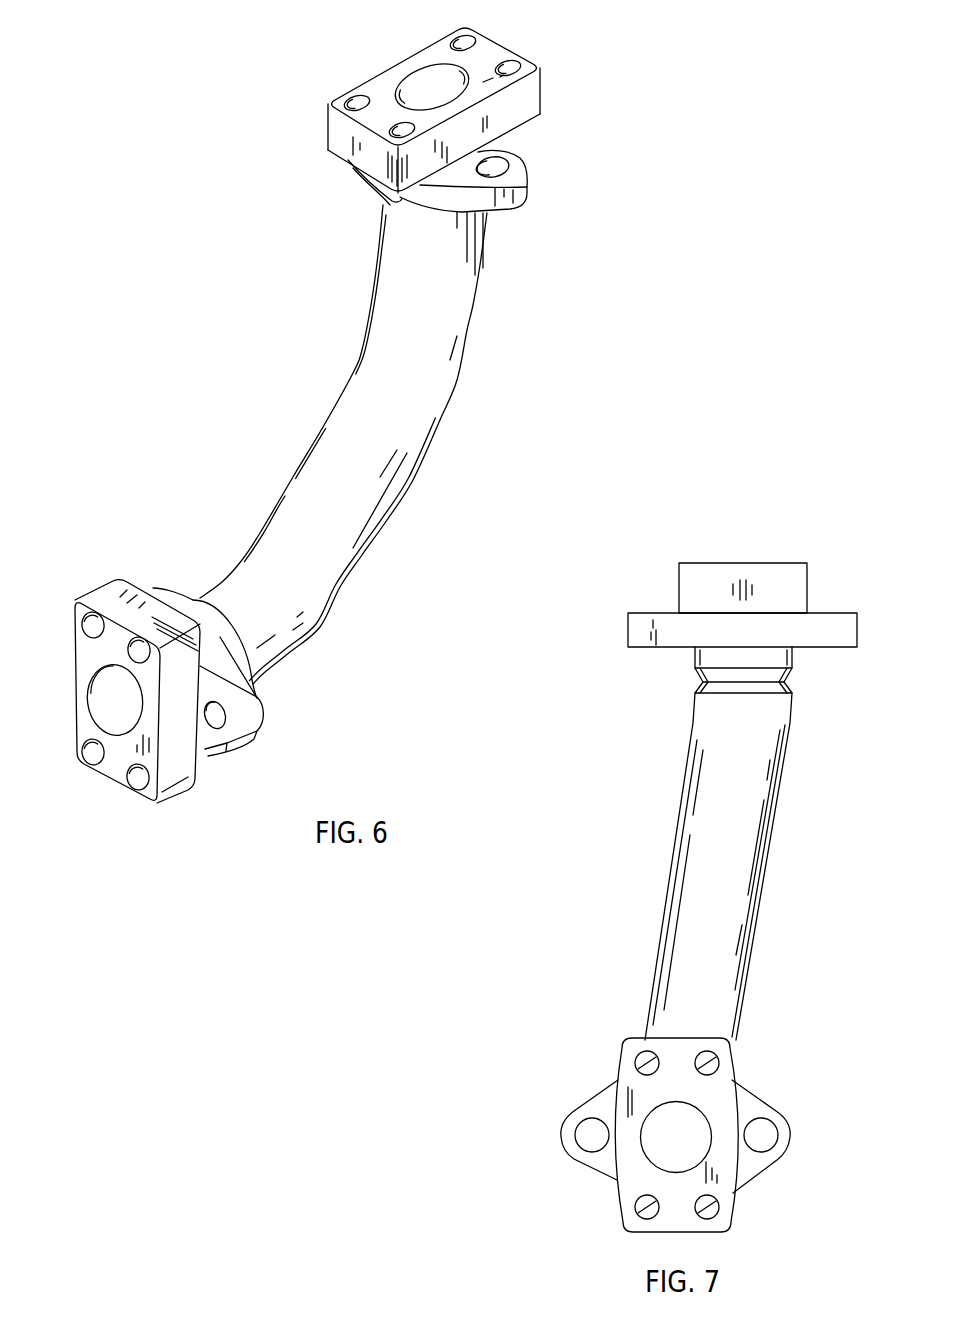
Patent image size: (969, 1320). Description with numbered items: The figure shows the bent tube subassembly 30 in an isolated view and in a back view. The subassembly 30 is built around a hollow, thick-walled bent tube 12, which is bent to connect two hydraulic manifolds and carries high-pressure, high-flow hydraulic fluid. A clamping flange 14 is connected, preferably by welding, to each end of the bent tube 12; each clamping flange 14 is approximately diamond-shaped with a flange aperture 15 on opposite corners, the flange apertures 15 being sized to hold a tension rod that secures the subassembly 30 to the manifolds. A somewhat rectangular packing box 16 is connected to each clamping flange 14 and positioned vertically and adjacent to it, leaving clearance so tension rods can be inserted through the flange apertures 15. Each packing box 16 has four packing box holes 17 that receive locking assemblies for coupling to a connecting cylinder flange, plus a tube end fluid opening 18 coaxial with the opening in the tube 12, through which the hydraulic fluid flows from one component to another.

In FIG. 6, the bent tube 12 is at (438, 426).
In FIG. 7, the bent tube 12 is at (772, 823).
In FIG. 6, the clamping flange 14 is at (518, 143).
In FIG. 7, the clamping flange 14 is at (632, 637).
In FIG. 6, the flange aperture 15 is at (500, 165).
In FIG. 7, the flange aperture 15 is at (767, 1137).
In FIG. 6, the packing box 16 is at (540, 83).
In FIG. 7, the packing box 16 is at (687, 585).
In FIG. 6, the packing box hole 17 is at (462, 42).
In FIG. 7, the packing box hole 17 is at (713, 1060).
In FIG. 6, the tube end fluid opening 18 is at (100, 700).
In FIG. 7, the tube end fluid opening 18 is at (658, 1143).
In FIG. 6, the bent tube subassembly 30 is at (246, 313).
In FIG. 7, the bent tube subassembly 30 is at (836, 532).